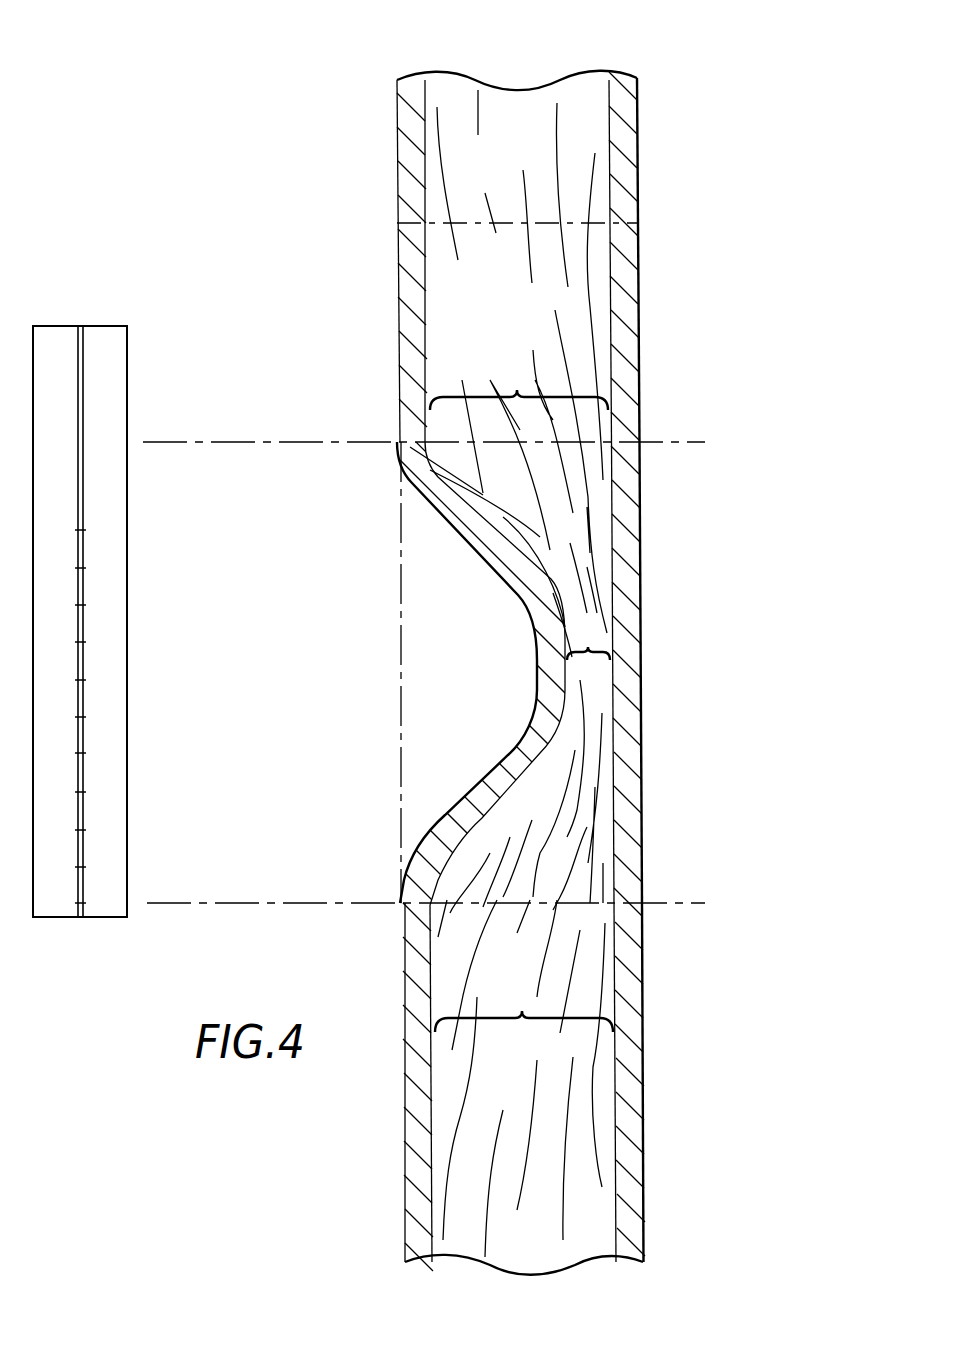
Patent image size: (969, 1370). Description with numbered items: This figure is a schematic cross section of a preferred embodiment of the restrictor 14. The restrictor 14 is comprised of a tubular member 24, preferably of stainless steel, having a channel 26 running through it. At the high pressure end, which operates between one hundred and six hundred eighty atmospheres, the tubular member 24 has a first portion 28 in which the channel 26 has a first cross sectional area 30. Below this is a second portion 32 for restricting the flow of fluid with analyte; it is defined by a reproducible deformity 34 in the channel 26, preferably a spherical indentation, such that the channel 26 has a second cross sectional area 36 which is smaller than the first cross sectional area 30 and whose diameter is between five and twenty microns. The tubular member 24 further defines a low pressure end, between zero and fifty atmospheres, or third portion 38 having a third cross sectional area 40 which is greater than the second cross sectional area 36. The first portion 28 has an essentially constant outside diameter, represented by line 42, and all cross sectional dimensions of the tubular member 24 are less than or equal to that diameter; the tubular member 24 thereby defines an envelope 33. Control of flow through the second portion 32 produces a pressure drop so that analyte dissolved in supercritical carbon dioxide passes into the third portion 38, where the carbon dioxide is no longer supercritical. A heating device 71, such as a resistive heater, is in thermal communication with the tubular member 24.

The restrictor 14 is at (416, 673).
The tubular member 24 is at (368, 258).
The channel 26 is at (559, 673).
The first portion 28 is at (668, 257).
The first cross sectional area 30 is at (519, 352).
The second portion 32 is at (668, 679).
The envelope 33 is at (424, 672).
The reproducible deformity 34 is at (490, 669).
The second cross sectional area 36 is at (592, 643).
The third portion 38 is at (565, 1087).
The third cross sectional area 40 is at (524, 978).
The line 42 is at (517, 182).
The heating device 71 is at (116, 621).